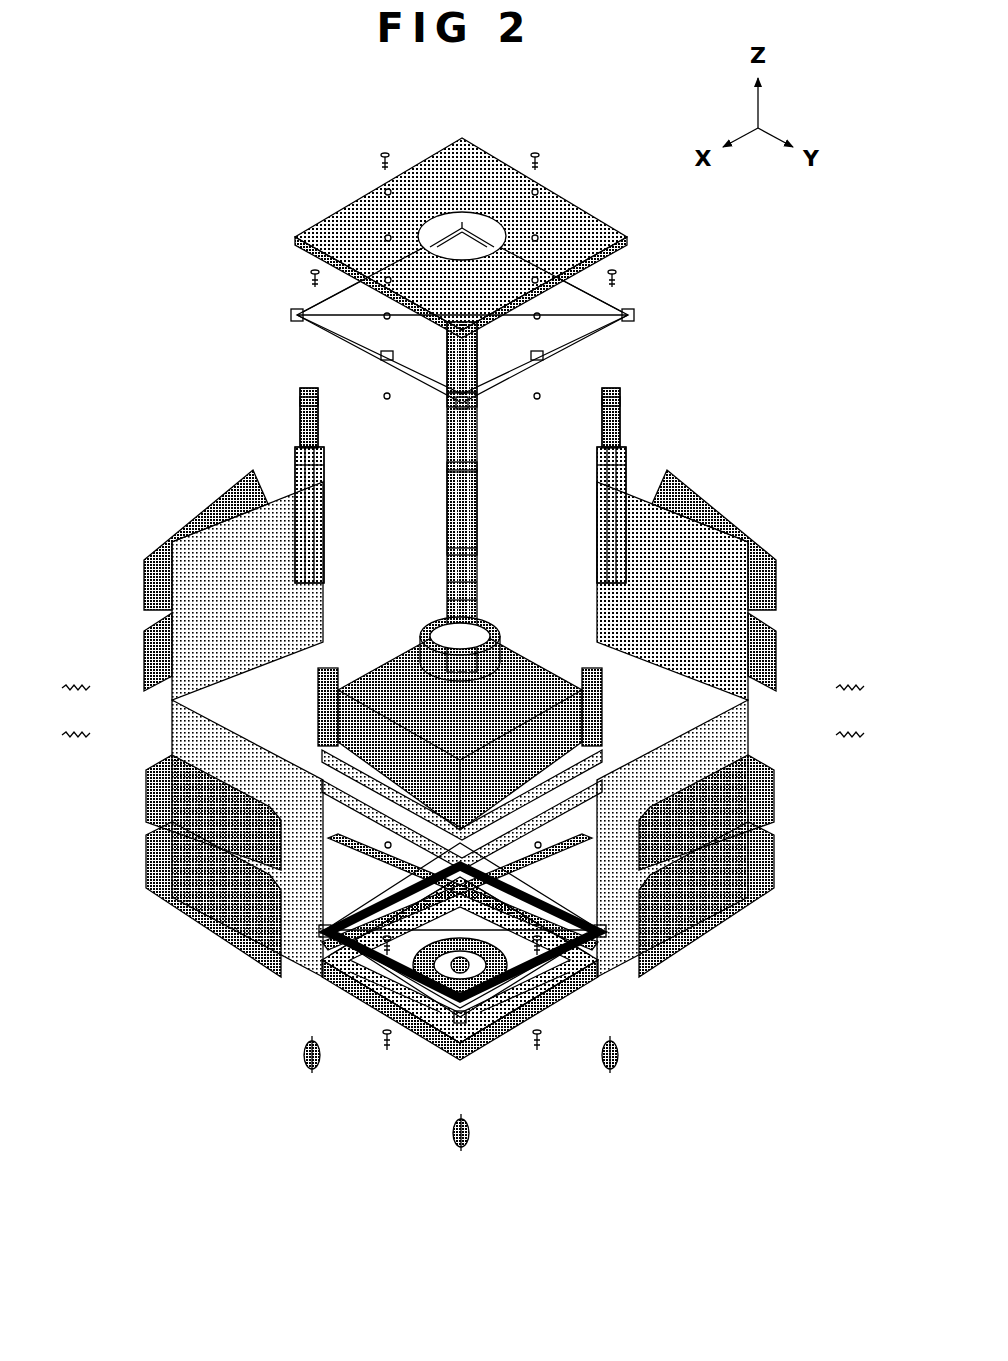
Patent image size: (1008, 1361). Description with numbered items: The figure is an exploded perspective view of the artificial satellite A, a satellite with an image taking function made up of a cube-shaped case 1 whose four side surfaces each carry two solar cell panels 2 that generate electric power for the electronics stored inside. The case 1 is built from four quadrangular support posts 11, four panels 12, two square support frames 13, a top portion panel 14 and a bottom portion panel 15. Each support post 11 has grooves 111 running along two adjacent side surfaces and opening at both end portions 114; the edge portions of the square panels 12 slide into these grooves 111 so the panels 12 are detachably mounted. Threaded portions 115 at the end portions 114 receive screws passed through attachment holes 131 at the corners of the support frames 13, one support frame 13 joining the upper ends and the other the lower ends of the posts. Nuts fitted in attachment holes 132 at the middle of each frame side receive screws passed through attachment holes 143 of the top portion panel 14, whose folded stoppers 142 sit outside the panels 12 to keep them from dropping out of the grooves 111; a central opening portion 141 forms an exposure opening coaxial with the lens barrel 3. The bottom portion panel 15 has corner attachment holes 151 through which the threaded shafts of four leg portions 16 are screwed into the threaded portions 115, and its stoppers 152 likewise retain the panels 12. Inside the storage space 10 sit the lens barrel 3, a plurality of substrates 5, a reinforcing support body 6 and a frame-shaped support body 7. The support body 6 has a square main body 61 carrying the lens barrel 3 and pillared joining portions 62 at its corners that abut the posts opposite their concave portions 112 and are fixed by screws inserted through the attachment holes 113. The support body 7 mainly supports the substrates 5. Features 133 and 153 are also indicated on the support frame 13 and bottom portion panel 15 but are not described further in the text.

The artificial satellite A is at (190, 186).
The case 1 is at (187, 436).
The solar cell panel 2 is at (175, 508).
The lens barrel 3 is at (509, 630).
The substrate 5 is at (326, 760).
The support body 6 is at (466, 723).
The support body 7 is at (352, 858).
The storage space 10 is at (383, 553).
The support post 11 is at (300, 414).
The panel 12 is at (225, 520).
The support frame 13 is at (467, 618).
The top portion panel 14 is at (445, 229).
The bottom portion panel 15 is at (431, 1021).
The leg portion 16 is at (312, 1070).
The main body 61 is at (395, 680).
The joining portion 62 is at (318, 700).
The groove 111 is at (307, 388).
The concave portion 112 is at (297, 466).
The attachment hole 113 is at (447, 549).
The end portion 114 is at (300, 393).
The threaded portion 115 is at (318, 401).
The attachment hole 131 is at (462, 224).
The attachment hole 132 is at (388, 357).
The screw hole 133 is at (461, 579).
The opening portion 141 is at (488, 212).
The stopper 142 is at (338, 247).
The attachment hole 143 is at (386, 190).
The attachment hole 151 is at (464, 1058).
The stopper 152 is at (387, 1013).
The base rear edge 153 is at (332, 985).